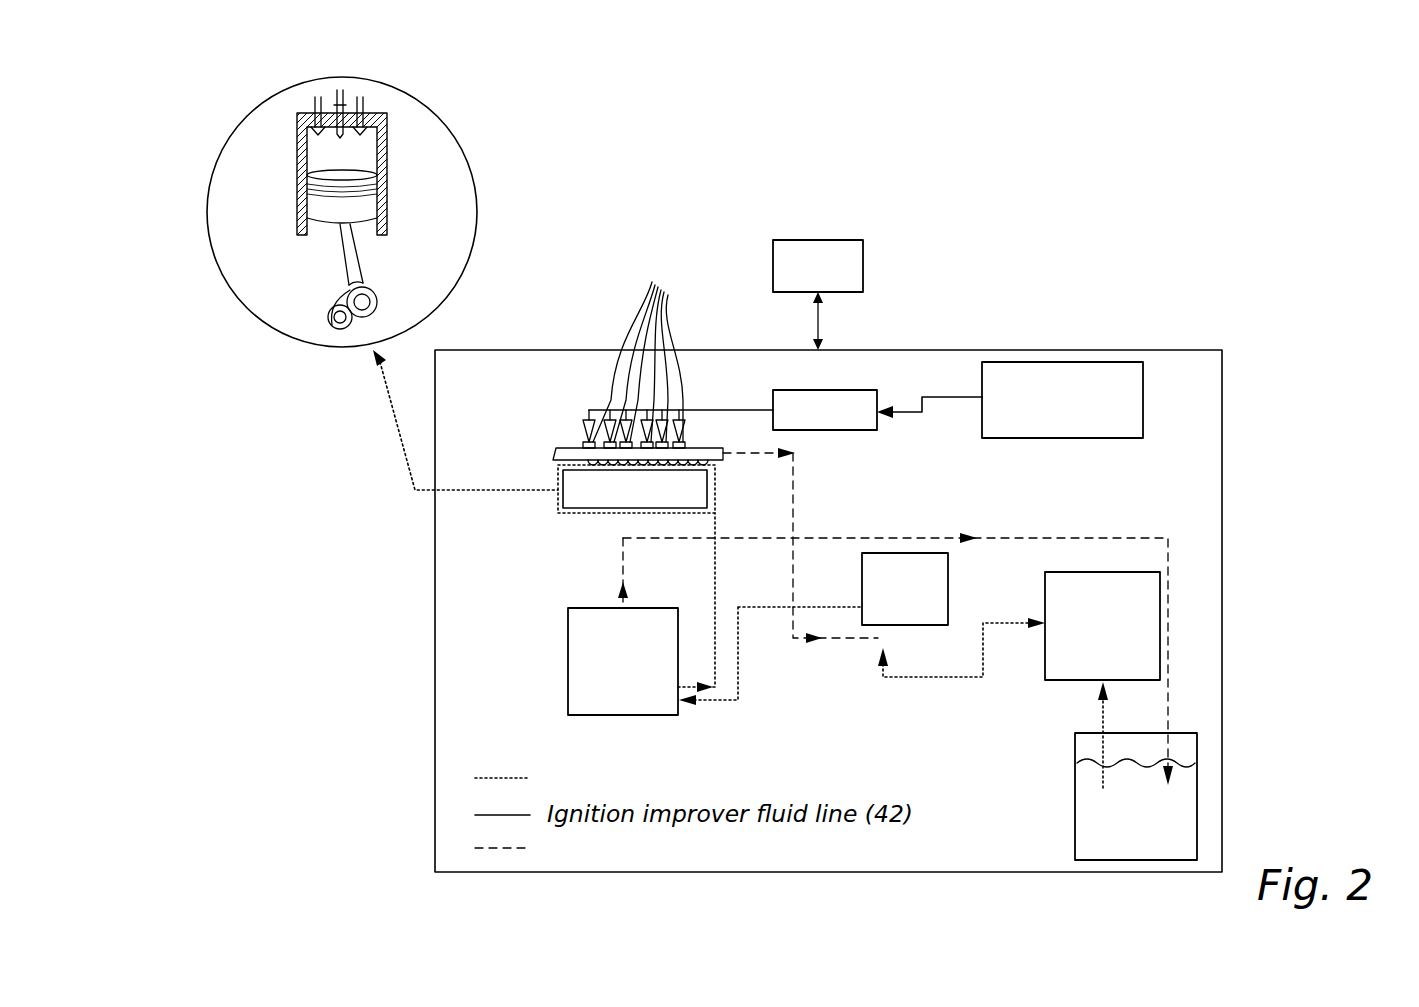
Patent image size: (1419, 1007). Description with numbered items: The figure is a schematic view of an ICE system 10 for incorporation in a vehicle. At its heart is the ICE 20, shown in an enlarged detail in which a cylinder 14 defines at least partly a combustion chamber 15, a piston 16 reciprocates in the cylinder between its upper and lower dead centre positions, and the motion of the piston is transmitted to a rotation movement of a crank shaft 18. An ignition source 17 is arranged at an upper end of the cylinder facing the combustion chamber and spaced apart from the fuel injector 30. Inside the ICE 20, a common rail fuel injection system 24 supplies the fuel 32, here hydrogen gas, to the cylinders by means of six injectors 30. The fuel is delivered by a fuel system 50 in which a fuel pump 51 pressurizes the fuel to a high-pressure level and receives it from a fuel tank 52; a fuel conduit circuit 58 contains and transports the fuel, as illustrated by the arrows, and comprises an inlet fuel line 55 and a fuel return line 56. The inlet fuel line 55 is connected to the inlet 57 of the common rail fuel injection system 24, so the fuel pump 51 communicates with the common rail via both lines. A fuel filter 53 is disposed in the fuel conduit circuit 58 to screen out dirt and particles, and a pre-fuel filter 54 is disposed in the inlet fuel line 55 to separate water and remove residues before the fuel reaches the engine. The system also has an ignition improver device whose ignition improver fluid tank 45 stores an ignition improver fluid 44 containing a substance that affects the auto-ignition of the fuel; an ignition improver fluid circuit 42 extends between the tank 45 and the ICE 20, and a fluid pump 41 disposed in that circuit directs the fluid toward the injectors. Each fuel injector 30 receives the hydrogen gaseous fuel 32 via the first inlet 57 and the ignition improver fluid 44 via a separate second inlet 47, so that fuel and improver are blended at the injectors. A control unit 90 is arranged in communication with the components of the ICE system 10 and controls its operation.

The ICE system 10 is at (572, 319).
The cylinder 14 is at (297, 215).
The combustion chamber 15 is at (305, 152).
The piston 16 is at (317, 210).
The ignition source 17 is at (356, 134).
The crank shaft 18 is at (310, 333).
The ICE 20 is at (557, 500).
The common rail fuel injection system 24 is at (557, 448).
The fuel injector 30 is at (344, 128).
The fuel 32 is at (670, 515).
The fluid pump 41 is at (863, 390).
The ignition improver fluid circuit 42 is at (700, 410).
The ignition improver fluid 44 is at (958, 397).
The ignition improver fluid tank 45 is at (1052, 362).
The inlet 47 is at (644, 352).
The fuel system 50 is at (1172, 362).
The fuel pump 51 is at (950, 595).
The fuel tank 52 is at (1182, 752).
The fuel filter 53 is at (567, 638).
The pre-fuel filter 54 is at (1160, 628).
The inlet fuel line 55 is at (740, 569).
The fuel return line 56 is at (824, 655).
The inlet 57 is at (722, 458).
The fuel conduit circuit 58 is at (795, 487).
The control unit 90 is at (822, 240).